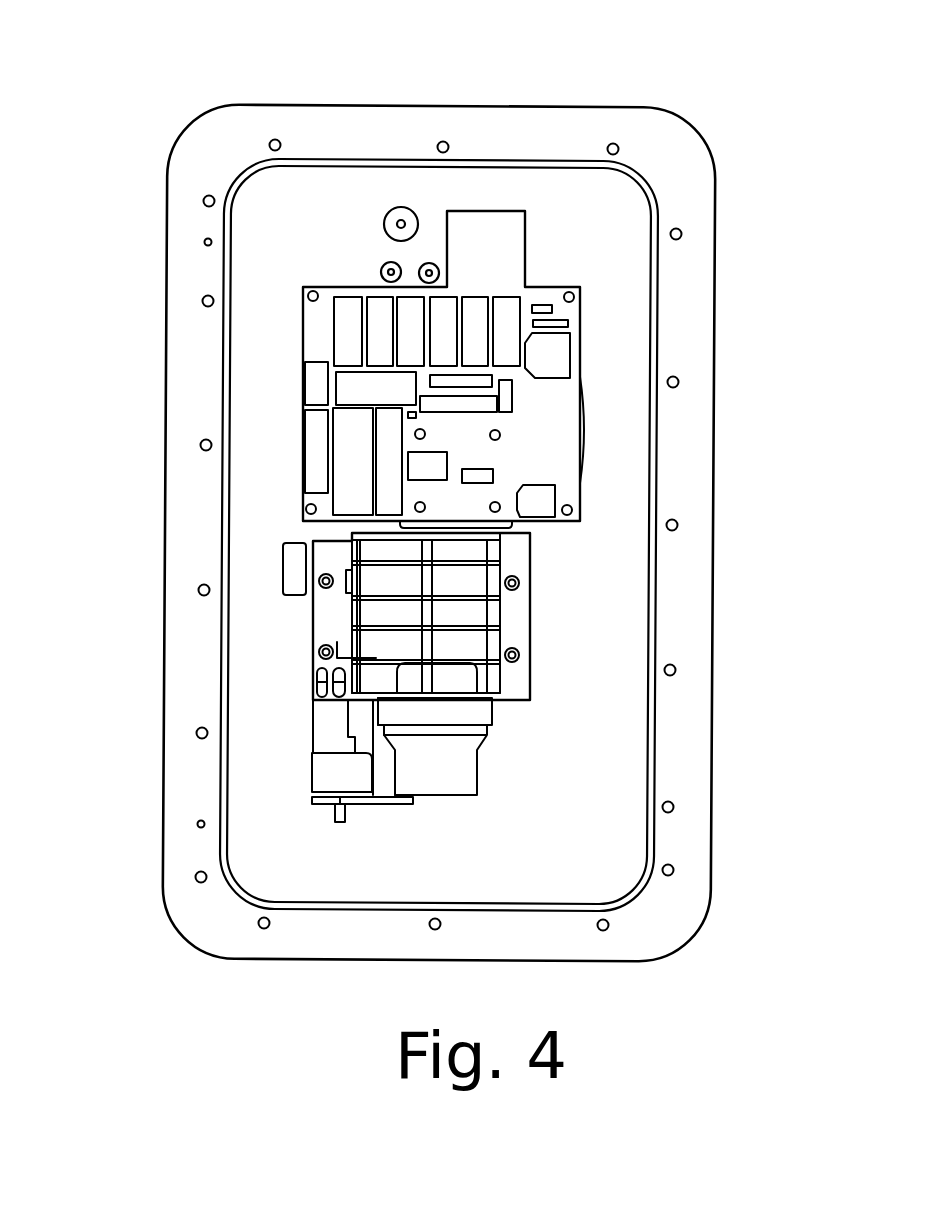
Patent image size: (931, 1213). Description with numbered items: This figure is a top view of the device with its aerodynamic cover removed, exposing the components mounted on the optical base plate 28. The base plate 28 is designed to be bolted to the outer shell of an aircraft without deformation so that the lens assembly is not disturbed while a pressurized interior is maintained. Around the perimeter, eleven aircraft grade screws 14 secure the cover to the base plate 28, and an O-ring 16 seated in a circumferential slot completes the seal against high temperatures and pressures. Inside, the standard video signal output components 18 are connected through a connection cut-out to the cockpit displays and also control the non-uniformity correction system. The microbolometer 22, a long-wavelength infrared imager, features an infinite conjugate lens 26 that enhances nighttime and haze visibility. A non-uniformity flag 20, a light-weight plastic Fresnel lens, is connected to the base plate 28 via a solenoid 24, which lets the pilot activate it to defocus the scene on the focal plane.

The aircraft grade screws 14 is at (205, 200).
The O-ring 16 is at (316, 160).
The standard video signal output components 18 is at (558, 461).
The non-uniformity flag 20 is at (377, 808).
The microbolometer 22 is at (515, 617).
The solenoid 24 is at (322, 776).
The infinite conjugate lens 26 is at (467, 774).
The base plate 28 is at (683, 157).